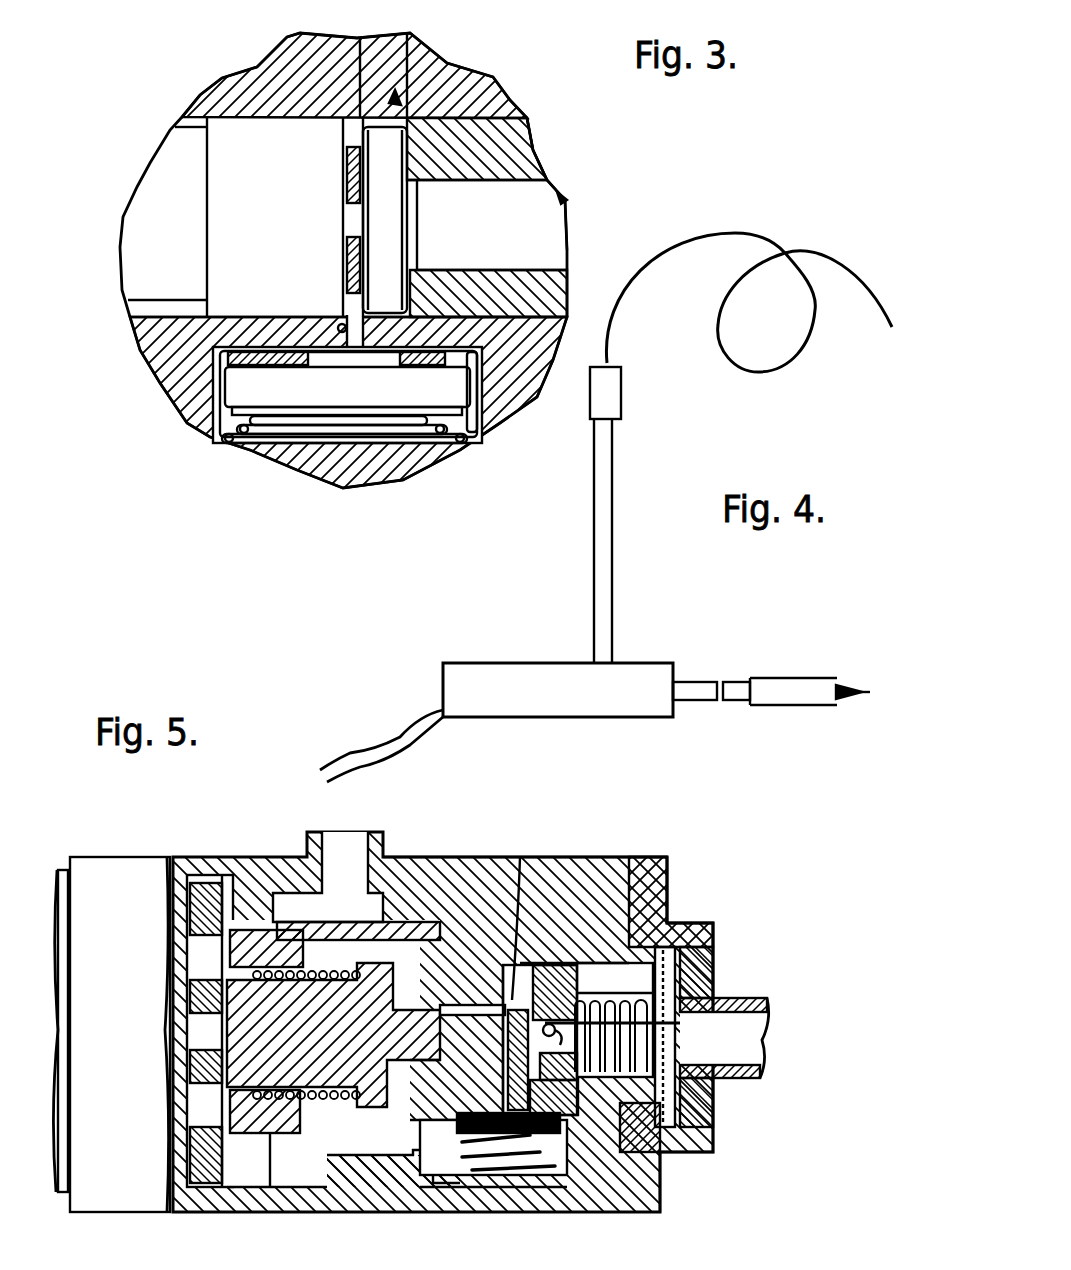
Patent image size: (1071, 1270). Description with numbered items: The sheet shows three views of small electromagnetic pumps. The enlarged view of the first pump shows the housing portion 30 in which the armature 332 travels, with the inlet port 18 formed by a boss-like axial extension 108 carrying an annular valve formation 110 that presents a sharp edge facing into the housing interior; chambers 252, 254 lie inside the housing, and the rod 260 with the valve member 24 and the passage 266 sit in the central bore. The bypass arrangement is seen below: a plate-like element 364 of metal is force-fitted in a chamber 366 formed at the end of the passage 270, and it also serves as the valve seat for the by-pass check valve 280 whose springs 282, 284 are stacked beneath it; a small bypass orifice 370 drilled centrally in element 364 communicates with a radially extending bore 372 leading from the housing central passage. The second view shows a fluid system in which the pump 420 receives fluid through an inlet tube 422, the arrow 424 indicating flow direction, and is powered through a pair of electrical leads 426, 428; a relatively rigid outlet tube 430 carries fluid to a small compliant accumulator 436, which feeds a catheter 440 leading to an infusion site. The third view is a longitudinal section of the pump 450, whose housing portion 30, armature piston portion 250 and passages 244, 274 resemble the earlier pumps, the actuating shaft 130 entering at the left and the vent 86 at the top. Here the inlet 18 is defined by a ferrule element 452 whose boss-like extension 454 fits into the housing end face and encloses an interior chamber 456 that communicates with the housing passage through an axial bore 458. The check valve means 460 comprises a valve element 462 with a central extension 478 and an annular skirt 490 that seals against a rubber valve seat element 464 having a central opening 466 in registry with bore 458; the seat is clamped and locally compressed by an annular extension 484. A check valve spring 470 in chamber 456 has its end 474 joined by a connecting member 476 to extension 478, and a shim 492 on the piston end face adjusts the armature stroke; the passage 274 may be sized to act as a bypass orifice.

In FIG. 3, the housing portion 30 is at (272, 60).
In FIG. 5, the housing portion 30 is at (565, 860).
In FIG. 3, the passage 266 is at (360, 118).
In FIG. 3, the valve member 24 is at (398, 98).
In FIG. 3, the rod 260 is at (400, 133).
In FIG. 3, the boss-like axial extension 108 is at (538, 135).
In FIG. 3, the inlet port 18 is at (567, 200).
In FIG. 5, the inlet port 18 is at (768, 1035).
In FIG. 3, the first chamber 252 is at (190, 221).
In FIG. 3, the second chamber 254 is at (292, 226).
In FIG. 3, the annular valve formation 110 is at (443, 180).
In FIG. 3, the radially extending bore 372 is at (335, 326).
In FIG. 3, the passage 270 is at (225, 389).
In FIG. 3, the first spring 282 is at (232, 396).
In FIG. 3, the second spring 284 is at (242, 422).
In FIG. 3, the by-pass check valve 280 is at (310, 410).
In FIG. 3, the bypass orifice 370 is at (352, 348).
In FIG. 3, the plate-like element 364 is at (440, 360).
In FIG. 3, the chamber 366 is at (472, 420).
In FIG. 4, the catheter 440 is at (753, 233).
In FIG. 4, the accumulator 436 is at (620, 393).
In FIG. 4, the outlet tube 430 is at (612, 597).
In FIG. 4, the pump 420 is at (630, 705).
In FIG. 4, the inlet tube 422 is at (738, 682).
In FIG. 4, the arrow 424 is at (870, 692).
In FIG. 4, the electrical lead 426 is at (405, 735).
In FIG. 4, the electrical lead 428 is at (410, 745).
In FIG. 5, the actuating shaft 130 is at (62, 870).
In FIG. 5, the pump 450 is at (255, 845).
In FIG. 5, the vent port 86 is at (305, 858).
In FIG. 5, the check valve means 460 is at (520, 865).
In FIG. 5, the ferrule element 452 is at (668, 878).
In FIG. 5, the interior chamber 456 is at (668, 905).
In FIG. 5, the boss-like extension 454 is at (612, 940).
In FIG. 5, the axial bore 458 is at (590, 975).
In FIG. 5, the valve element 462 is at (498, 990).
In FIG. 5, the connecting member 476 is at (557, 1000).
In FIG. 5, the shim element 492 is at (497, 1010).
In FIG. 5, the central extension 478 is at (505, 1037).
In FIG. 5, the annular skirt 490 is at (506, 1085).
In FIG. 5, the central opening 466 is at (600, 1072).
In FIG. 5, the spring end 474 is at (668, 1024).
In FIG. 5, the check valve spring 470 is at (712, 1105).
In FIG. 5, the armature piston portion 250 is at (418, 1118).
In FIG. 5, the armature 332 is at (185, 1152).
In FIG. 5, the spring 244 is at (312, 1100).
In FIG. 5, the passage 274 is at (442, 1190).
In FIG. 5, the annular extension 484 is at (528, 1200).
In FIG. 5, the valve seat element 464 is at (600, 1195).